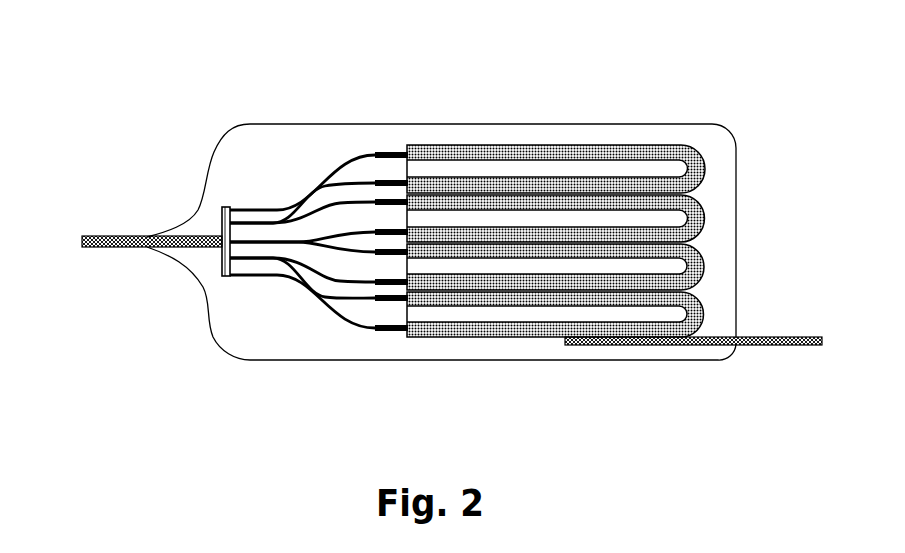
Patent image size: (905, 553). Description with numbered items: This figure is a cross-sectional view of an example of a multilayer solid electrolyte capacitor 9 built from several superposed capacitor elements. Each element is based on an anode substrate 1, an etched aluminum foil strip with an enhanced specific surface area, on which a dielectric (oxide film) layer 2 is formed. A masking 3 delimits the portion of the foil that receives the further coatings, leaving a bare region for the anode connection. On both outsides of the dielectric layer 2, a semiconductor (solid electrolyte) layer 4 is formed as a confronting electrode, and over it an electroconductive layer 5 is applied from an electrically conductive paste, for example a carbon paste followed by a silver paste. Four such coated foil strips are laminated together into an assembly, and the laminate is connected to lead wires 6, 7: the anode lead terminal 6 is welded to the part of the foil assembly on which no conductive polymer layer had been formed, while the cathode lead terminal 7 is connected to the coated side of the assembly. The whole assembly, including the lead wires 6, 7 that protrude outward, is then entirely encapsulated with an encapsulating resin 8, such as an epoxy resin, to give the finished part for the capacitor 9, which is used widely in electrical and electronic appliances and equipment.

The anode substrate 1 is at (250, 213).
The dielectric (oxide film) layer 2 is at (300, 190).
The masking 3 is at (395, 150).
The semiconductor (solid electrolyte) layer 4 is at (452, 147).
The electroconductive layer 5 is at (244, 350).
The lead wire 6 is at (110, 236).
The lead wire 7 is at (720, 345).
The encapsulating resin 8 is at (355, 347).
The solid electrolyte capacitor 9 is at (655, 99).